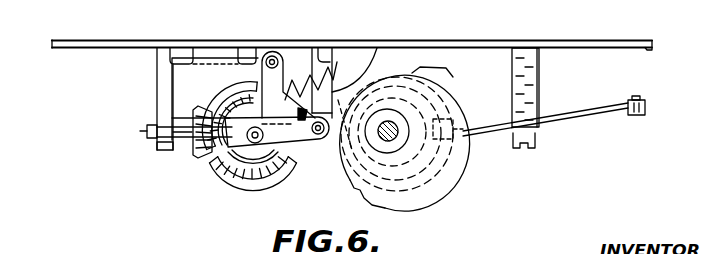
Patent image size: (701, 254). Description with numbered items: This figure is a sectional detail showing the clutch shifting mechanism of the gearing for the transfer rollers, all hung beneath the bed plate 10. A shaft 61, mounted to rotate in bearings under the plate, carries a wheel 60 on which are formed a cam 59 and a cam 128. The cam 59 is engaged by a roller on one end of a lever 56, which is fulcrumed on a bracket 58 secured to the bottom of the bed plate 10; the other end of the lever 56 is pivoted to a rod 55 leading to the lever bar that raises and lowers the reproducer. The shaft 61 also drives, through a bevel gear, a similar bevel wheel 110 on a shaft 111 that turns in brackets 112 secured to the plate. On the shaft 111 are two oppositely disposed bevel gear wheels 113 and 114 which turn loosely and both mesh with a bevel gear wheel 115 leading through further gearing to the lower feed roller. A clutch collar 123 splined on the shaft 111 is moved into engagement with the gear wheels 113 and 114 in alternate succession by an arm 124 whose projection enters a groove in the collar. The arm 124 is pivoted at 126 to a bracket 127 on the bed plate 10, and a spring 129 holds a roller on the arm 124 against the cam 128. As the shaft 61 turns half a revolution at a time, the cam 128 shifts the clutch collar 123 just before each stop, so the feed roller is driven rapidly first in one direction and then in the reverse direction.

The bed plate 10 is at (583, 40).
The rod 55 is at (645, 101).
The lever 56 is at (572, 121).
The bracket 58 is at (540, 80).
The cam 59 is at (445, 104).
The wheel 60 is at (424, 87).
The shaft 61 is at (389, 120).
The bevel wheel 110 is at (350, 150).
The shaft 111 is at (147, 131).
The brackets 112 is at (160, 88).
The bevel gear wheel 113 is at (303, 160).
The bevel gear wheel 114 is at (200, 152).
The bevel gear wheel 115 is at (222, 99).
The clutch collar 123 is at (223, 173).
The arm 124 is at (242, 180).
The pivot 126 is at (273, 55).
The bracket 127 is at (254, 48).
The cam 128 is at (436, 187).
The spring 129 is at (327, 51).